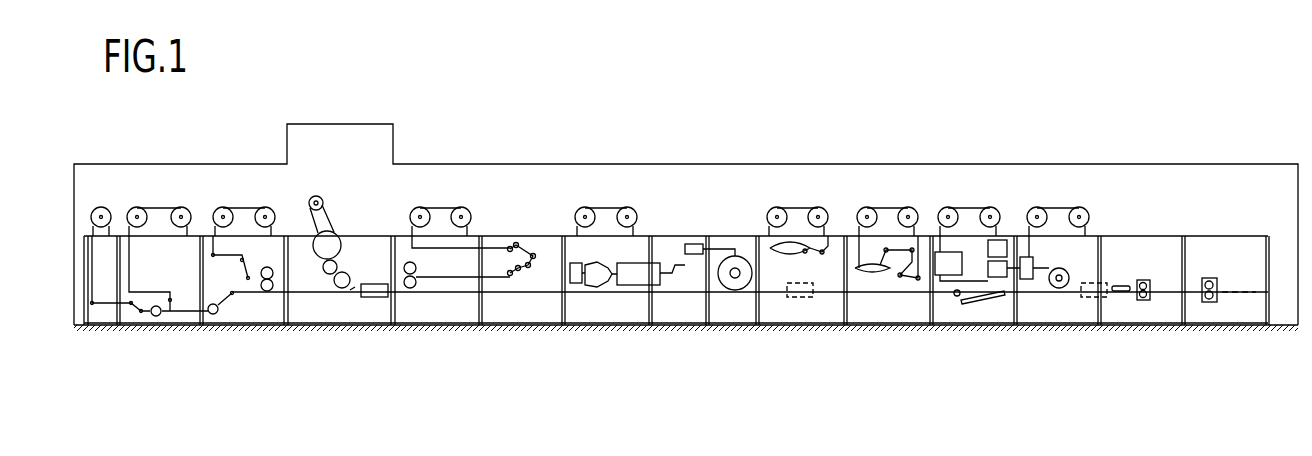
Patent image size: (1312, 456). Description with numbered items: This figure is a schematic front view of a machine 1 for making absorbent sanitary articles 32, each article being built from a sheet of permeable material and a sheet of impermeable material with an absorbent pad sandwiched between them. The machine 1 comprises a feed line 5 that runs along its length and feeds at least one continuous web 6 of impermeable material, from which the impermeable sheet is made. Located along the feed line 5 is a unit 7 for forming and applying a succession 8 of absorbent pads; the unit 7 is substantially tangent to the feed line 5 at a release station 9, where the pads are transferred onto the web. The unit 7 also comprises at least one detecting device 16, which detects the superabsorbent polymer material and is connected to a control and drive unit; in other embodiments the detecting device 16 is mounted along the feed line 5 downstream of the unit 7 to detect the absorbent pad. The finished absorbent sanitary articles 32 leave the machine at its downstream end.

The machine 1 is at (698, 132).
The feed line 5 is at (531, 297).
The continuous web 6 is at (546, 291).
The unit for forming and applying absorbent pads 7 is at (343, 190).
The succession of absorbent pads 8 is at (333, 286).
The release station 9 is at (355, 289).
The detecting device 16 is at (380, 302).
The absorbent sanitary article 32 is at (1243, 302).